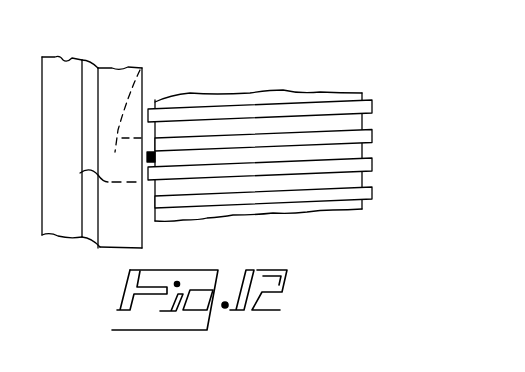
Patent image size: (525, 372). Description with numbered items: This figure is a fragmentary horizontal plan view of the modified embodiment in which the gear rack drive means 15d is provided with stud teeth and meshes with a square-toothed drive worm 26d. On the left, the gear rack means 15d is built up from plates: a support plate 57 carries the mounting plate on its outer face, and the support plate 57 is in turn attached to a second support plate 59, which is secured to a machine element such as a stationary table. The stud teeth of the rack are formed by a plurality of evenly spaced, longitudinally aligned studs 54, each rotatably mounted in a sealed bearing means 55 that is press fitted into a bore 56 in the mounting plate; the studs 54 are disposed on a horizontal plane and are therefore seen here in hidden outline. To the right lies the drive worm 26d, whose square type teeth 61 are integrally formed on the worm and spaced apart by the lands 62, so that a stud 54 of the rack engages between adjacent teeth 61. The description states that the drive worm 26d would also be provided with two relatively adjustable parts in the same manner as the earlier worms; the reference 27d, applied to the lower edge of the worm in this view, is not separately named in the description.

The gear rack drive means 15d is at (132, 65).
The drive worm 26d is at (294, 93).
The lower edge of louver panel 27d is at (259, 217).
The studs 54 is at (155, 162).
The sealed bearing means 55 is at (142, 87).
The bores 56 is at (78, 173).
The support plate 57 is at (88, 60).
The second support plate 59 is at (62, 58).
The square type teeth 61 is at (307, 102).
The lands 62 is at (357, 120).